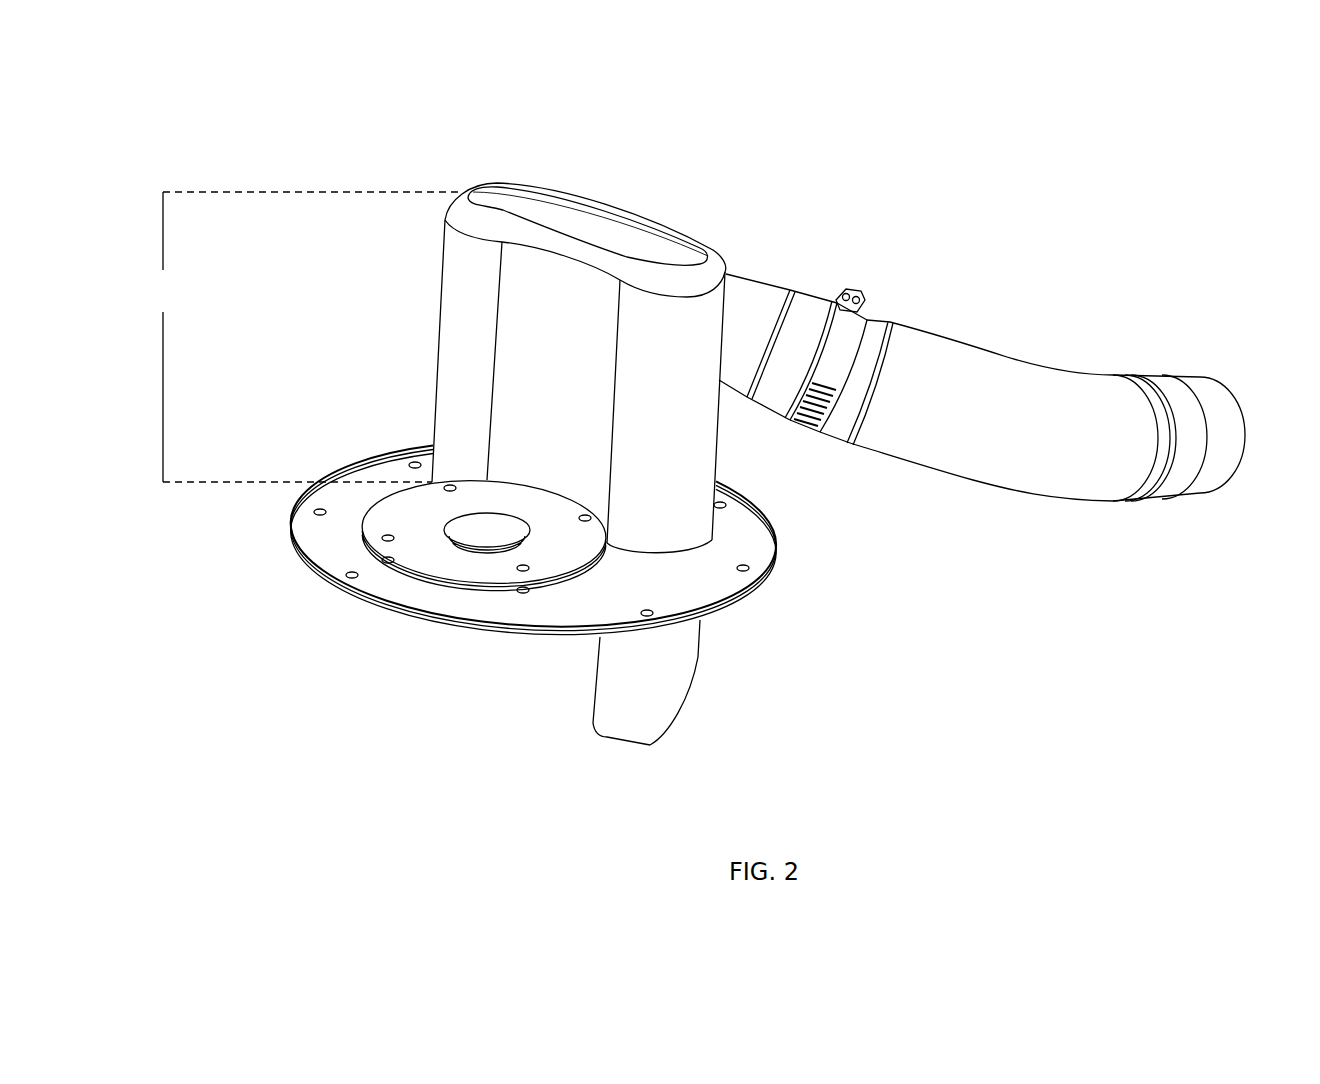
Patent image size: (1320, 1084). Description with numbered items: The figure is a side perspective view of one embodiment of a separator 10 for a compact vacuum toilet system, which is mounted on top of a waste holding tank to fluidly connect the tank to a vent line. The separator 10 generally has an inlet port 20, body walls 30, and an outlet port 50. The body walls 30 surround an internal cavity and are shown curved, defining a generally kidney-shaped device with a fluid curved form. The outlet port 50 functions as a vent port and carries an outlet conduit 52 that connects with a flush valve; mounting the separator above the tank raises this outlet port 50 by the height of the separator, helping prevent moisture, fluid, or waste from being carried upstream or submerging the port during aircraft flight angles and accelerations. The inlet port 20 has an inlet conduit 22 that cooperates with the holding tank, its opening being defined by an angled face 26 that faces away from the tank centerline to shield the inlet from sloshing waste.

The separator 10 is at (323, 270).
The inlet port 20 is at (607, 543).
The inlet conduit 22 is at (657, 691).
The angled face 26 is at (695, 680).
The body walls 30 is at (462, 355).
The outlet port 50 is at (725, 270).
The outlet conduit 52 is at (1025, 441).